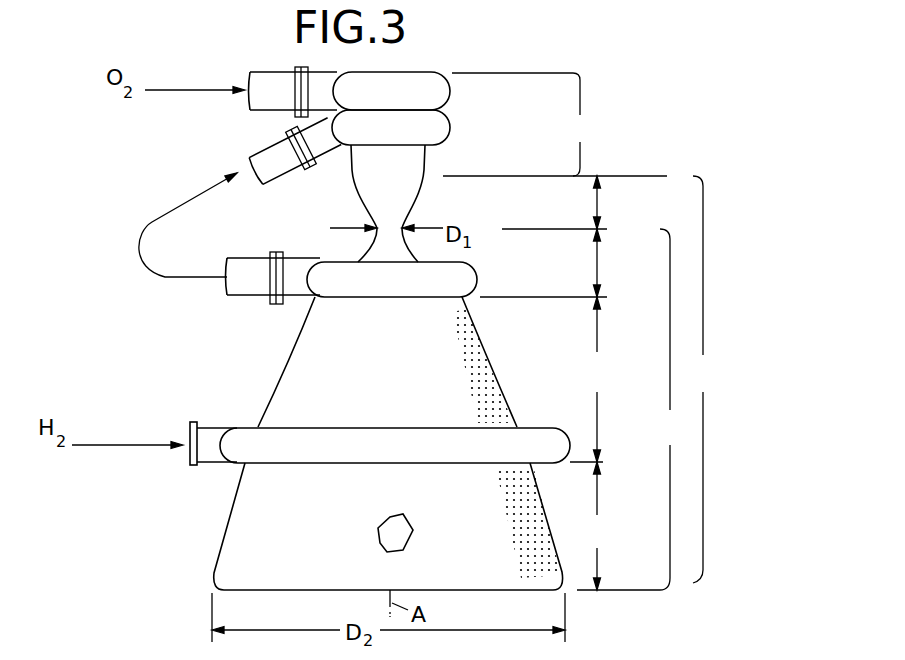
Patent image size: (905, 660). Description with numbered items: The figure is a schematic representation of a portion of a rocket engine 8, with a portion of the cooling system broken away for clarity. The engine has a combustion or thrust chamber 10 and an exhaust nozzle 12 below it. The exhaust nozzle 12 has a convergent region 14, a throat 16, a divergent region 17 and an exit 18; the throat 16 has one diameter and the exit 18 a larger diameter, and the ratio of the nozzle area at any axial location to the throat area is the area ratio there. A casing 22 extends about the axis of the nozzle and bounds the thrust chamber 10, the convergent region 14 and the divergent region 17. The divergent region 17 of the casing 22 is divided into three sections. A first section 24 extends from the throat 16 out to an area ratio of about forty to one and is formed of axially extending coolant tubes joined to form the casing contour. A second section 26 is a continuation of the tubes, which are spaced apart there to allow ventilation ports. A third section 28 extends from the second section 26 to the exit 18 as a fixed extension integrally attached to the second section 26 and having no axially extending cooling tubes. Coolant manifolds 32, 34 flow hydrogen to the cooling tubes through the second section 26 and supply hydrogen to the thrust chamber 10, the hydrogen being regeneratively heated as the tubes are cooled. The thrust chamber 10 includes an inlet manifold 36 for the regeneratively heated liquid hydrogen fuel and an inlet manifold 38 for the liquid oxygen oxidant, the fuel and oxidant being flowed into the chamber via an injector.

The rocket engine 8 is at (515, 159).
The combustion or thrust chamber 10 is at (584, 124).
The exhaust nozzle 12 is at (706, 379).
The convergent region 14 is at (598, 205).
The throat 16 is at (433, 222).
The divergent region 17 is at (632, 409).
The exit 18 is at (324, 592).
The casing 22 is at (483, 345).
The first section 24 is at (398, 535).
The second section 26 is at (596, 379).
The third section 28 is at (599, 526).
The coolant manifold 32 is at (213, 457).
The coolant manifold 34 is at (243, 293).
The inlet manifold for regeneratively heated liquid hydrogen fuel 36 is at (240, 166).
The inlet manifold for liquid oxygen oxidant 38 is at (236, 82).